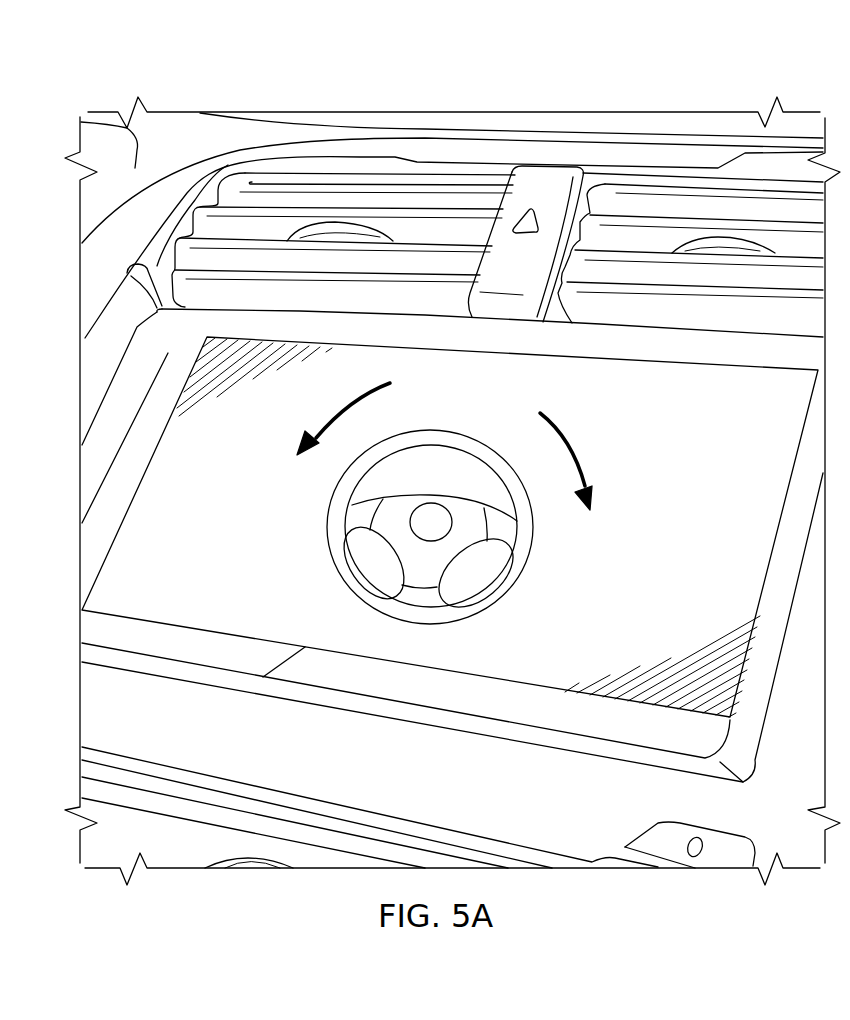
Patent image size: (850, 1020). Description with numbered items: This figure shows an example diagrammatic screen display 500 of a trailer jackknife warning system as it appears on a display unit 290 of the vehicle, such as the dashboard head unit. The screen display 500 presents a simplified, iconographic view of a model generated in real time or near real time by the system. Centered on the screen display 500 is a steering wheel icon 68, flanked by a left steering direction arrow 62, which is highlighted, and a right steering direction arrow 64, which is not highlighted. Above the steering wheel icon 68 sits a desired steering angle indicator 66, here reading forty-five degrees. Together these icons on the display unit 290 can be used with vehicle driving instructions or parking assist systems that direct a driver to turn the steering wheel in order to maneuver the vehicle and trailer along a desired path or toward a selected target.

The screen display 500 is at (84, 73).
The display unit 290 is at (247, 556).
The left steering direction arrow 62 is at (337, 412).
The right steering direction arrow 64 is at (582, 442).
The desired steering angle indicator 66 is at (515, 392).
The steering wheel icon 68 is at (497, 597).